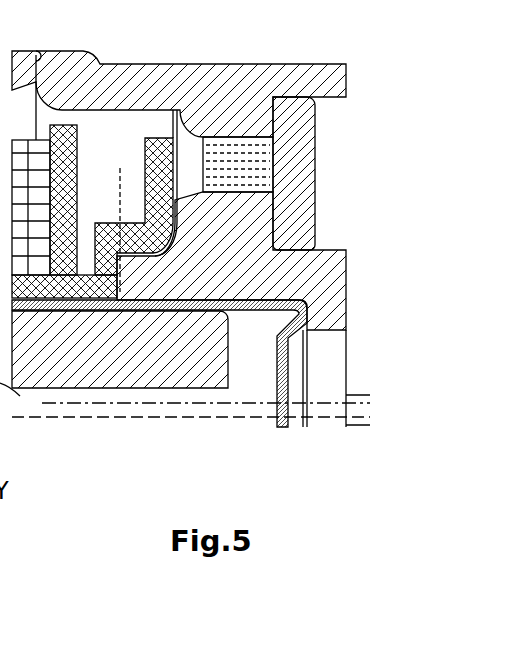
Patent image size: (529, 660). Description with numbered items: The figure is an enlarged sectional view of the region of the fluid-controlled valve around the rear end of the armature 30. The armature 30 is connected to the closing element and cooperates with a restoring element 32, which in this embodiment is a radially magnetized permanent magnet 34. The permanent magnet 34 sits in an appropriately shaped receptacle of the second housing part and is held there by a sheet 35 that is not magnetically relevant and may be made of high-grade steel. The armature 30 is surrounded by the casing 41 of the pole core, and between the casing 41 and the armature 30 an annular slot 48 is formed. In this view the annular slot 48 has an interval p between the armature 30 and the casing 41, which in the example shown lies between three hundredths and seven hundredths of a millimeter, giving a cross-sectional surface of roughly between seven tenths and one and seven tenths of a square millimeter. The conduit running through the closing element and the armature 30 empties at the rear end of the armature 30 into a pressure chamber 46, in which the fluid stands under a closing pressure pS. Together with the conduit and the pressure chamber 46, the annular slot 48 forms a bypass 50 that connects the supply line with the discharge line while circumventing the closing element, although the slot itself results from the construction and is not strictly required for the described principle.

The armature 30 is at (166, 373).
The restoring element 32 is at (247, 98).
The permanent magnet 34 is at (243, 157).
The sheet 35 is at (303, 165).
The casing 41 is at (200, 298).
The pressure chamber 46 is at (298, 414).
The bypass 50 is at (298, 414).
The closing pressure pS is at (257, 368).
The annular slot 48 is at (124, 320).
The interval p is at (105, 230).